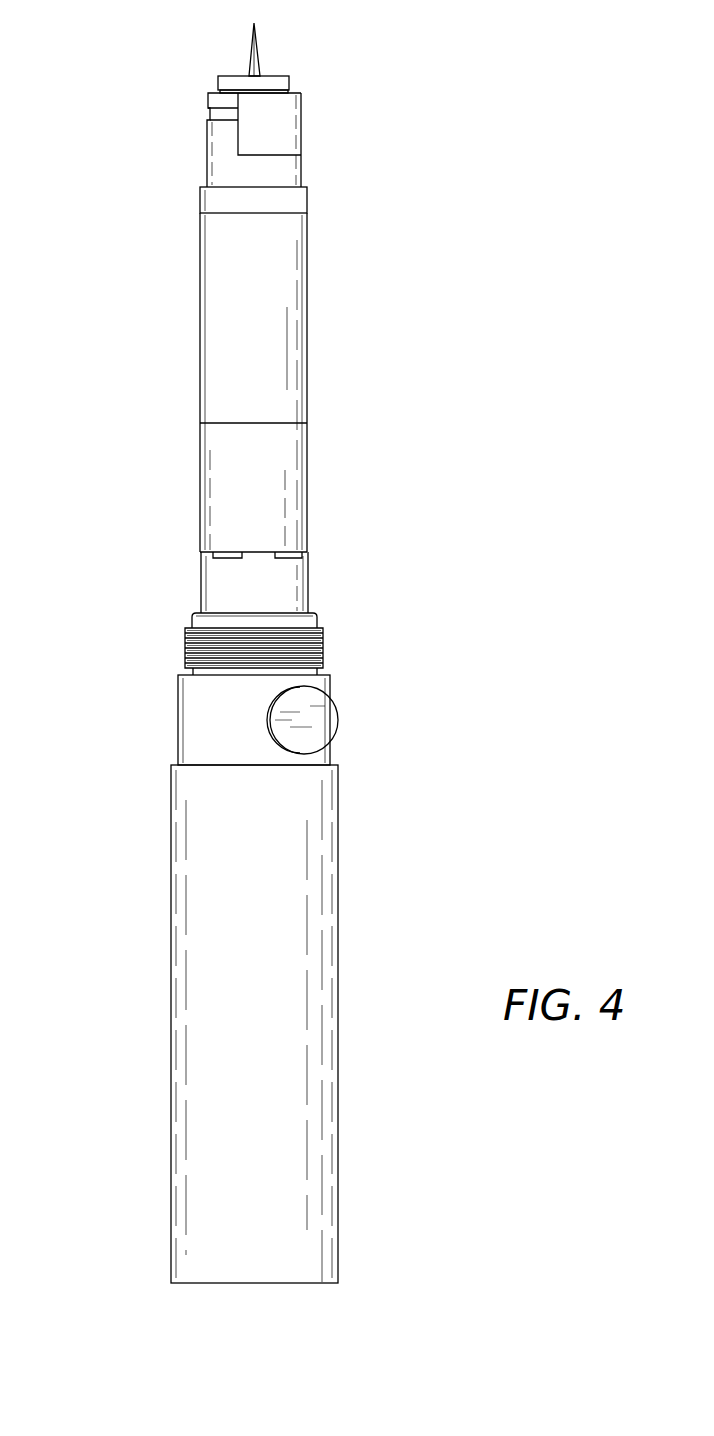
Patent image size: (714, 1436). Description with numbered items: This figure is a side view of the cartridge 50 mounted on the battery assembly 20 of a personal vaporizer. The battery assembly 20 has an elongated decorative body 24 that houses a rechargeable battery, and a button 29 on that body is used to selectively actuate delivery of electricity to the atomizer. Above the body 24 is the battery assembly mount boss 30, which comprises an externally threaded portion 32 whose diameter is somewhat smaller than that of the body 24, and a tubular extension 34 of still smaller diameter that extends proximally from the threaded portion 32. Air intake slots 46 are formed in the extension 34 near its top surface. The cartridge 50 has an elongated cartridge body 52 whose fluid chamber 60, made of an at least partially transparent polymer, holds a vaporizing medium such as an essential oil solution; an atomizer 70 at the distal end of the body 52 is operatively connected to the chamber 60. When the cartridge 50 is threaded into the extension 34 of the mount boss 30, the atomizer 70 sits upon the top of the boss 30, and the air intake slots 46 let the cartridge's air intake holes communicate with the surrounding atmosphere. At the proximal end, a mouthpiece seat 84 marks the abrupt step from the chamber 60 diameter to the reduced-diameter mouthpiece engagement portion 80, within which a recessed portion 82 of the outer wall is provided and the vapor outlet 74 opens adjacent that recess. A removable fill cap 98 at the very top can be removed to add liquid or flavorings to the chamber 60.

The battery assembly 20 is at (145, 948).
The elongated body 24 is at (272, 944).
The button 29 is at (325, 727).
The battery assembly mount boss 30 is at (170, 622).
The externally threaded portion 32 is at (323, 643).
The extension 34 is at (273, 581).
The air intake slots 46 is at (225, 555).
The cartridge 50 is at (328, 286).
The cartridge body 52 is at (265, 348).
The fluid chamber 60 is at (232, 293).
The atomizer 70 is at (233, 463).
The vapor outlet 74 is at (270, 155).
The mouthpiece engagement portion 80 is at (200, 142).
The recessed portion 82 is at (272, 107).
The mouthpiece seat 84 is at (205, 188).
The removable fill cap 98 is at (270, 83).